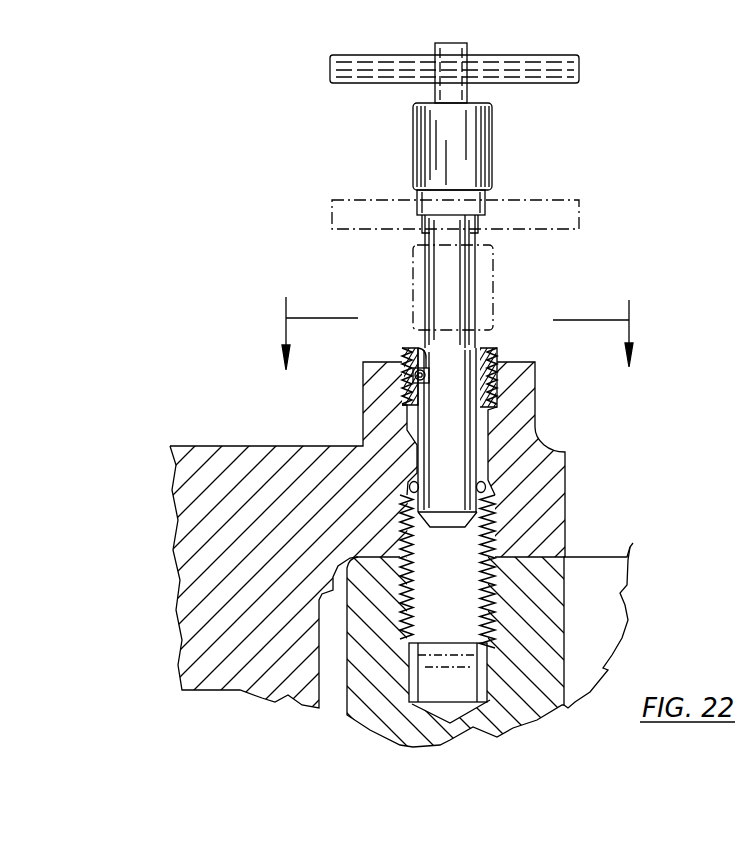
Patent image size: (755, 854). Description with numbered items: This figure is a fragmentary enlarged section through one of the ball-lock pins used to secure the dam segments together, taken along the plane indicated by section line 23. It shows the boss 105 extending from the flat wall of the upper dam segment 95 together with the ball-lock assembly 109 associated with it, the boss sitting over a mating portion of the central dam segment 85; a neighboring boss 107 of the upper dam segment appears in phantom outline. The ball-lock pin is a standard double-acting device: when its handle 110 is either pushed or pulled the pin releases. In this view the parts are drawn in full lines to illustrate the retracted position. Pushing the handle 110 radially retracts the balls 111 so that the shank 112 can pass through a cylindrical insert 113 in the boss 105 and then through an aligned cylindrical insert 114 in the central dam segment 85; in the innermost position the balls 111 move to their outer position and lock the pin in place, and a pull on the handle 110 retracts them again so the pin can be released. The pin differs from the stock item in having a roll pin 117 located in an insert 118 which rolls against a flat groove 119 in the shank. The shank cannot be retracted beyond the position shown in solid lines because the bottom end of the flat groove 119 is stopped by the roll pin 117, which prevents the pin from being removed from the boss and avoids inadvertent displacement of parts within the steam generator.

The section line 23- 23 is at (451, 333).
The central dam segment 85 is at (557, 648).
The upper dam segment 95 is at (200, 627).
The boss 105 is at (523, 420).
The boss 107 is at (390, 291).
The ball-lock assembly 109 is at (458, 284).
The handle 110 is at (556, 60).
The balls 111 is at (410, 484).
The shank 112 is at (418, 446).
The cylindrical insert 113 is at (490, 523).
The cylindrical insert 114 is at (563, 605).
The roll pin 117 is at (424, 366).
The insert 118 is at (409, 373).
The flat groove 119 is at (427, 262).